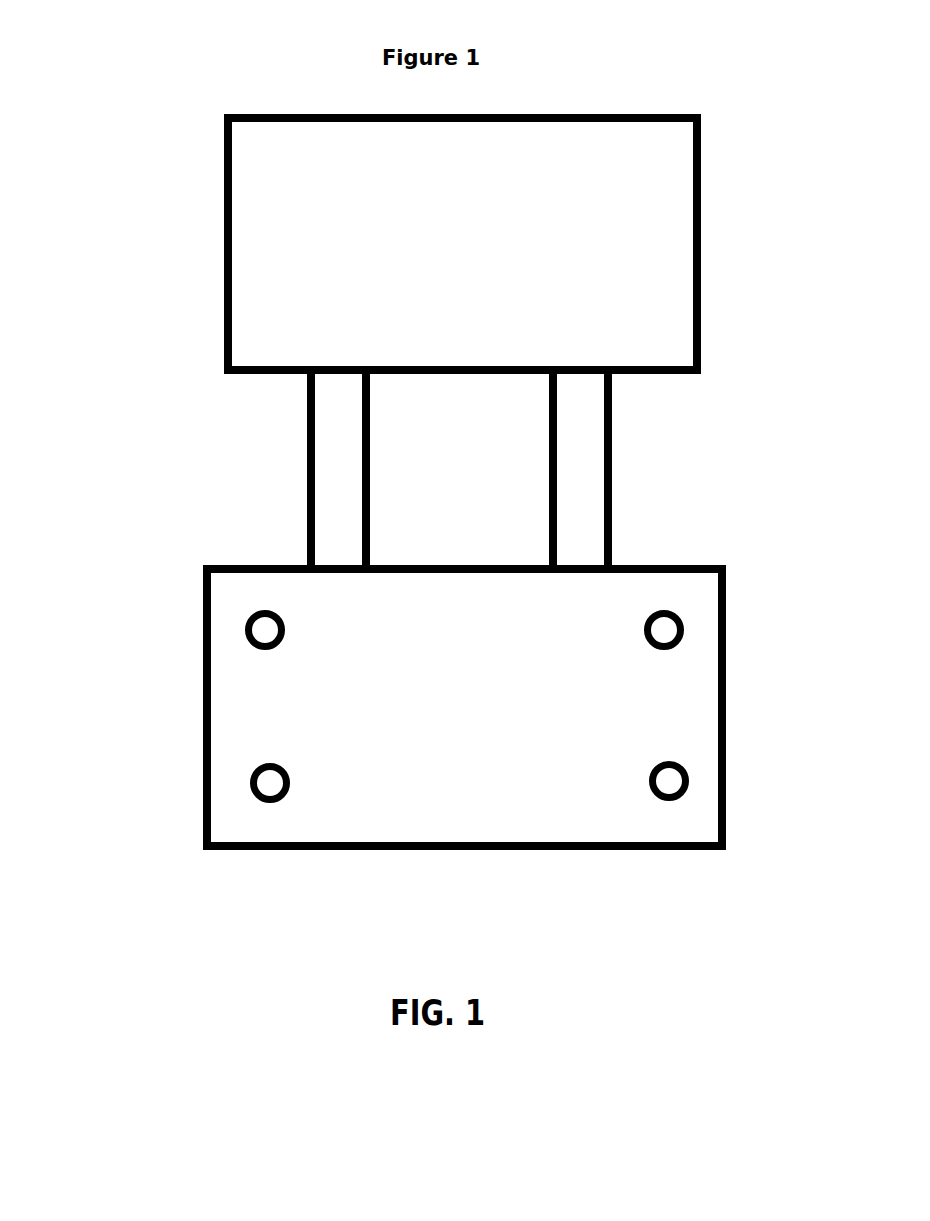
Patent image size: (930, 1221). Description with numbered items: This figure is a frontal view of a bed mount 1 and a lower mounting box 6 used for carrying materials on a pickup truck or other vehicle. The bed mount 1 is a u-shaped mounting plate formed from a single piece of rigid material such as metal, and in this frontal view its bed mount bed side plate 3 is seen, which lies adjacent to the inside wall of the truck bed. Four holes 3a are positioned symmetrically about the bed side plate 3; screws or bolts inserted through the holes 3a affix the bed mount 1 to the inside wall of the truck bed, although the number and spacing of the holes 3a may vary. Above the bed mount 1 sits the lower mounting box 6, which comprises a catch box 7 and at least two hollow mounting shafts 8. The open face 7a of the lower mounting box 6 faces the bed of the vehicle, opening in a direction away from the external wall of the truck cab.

The bed mount 1 is at (419, 673).
The bed mount bed side plate 3 is at (385, 703).
The holes 3a is at (690, 776).
The lower mounting box 6 is at (427, 208).
The catch box 7 is at (700, 245).
The open face 7a is at (407, 263).
The hollow mounting shafts 8 is at (612, 457).